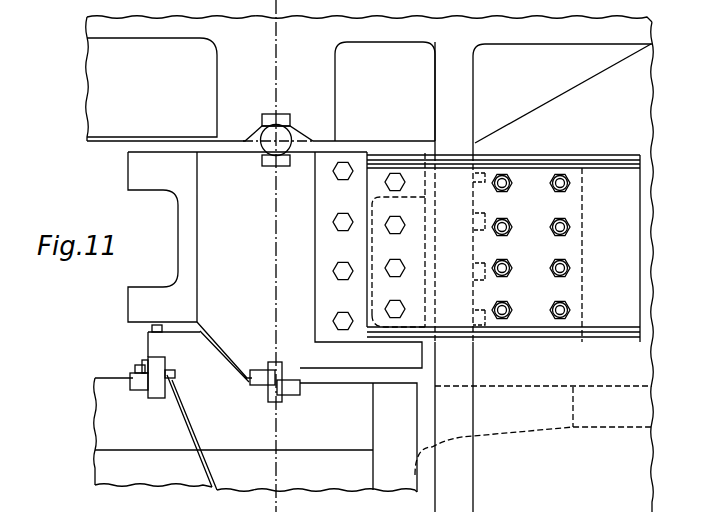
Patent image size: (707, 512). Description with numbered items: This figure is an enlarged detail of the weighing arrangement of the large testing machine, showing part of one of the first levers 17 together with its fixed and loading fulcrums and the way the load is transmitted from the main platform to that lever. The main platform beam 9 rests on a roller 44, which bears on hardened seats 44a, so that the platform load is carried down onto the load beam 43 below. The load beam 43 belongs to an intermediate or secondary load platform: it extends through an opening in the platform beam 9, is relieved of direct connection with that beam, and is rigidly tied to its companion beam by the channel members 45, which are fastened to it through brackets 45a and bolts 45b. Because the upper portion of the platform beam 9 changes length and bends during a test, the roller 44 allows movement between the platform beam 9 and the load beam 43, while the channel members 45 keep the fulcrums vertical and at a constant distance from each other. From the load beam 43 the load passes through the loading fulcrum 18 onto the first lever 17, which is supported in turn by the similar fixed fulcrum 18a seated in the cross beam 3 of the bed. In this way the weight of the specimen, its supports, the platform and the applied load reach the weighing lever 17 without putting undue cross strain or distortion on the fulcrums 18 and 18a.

The cross beam 3 is at (233, 432).
The platform beam 9 is at (370, 264).
The first lever 17 is at (282, 408).
The fulcrum 18 is at (274, 402).
The fulcrum 18a is at (175, 374).
The load beam 43 is at (247, 267).
The roller 44 is at (265, 148).
The hardened seat 44a is at (270, 179).
The channel member 45 is at (544, 255).
The bracket 45a is at (470, 322).
The bolt 45b is at (555, 220).